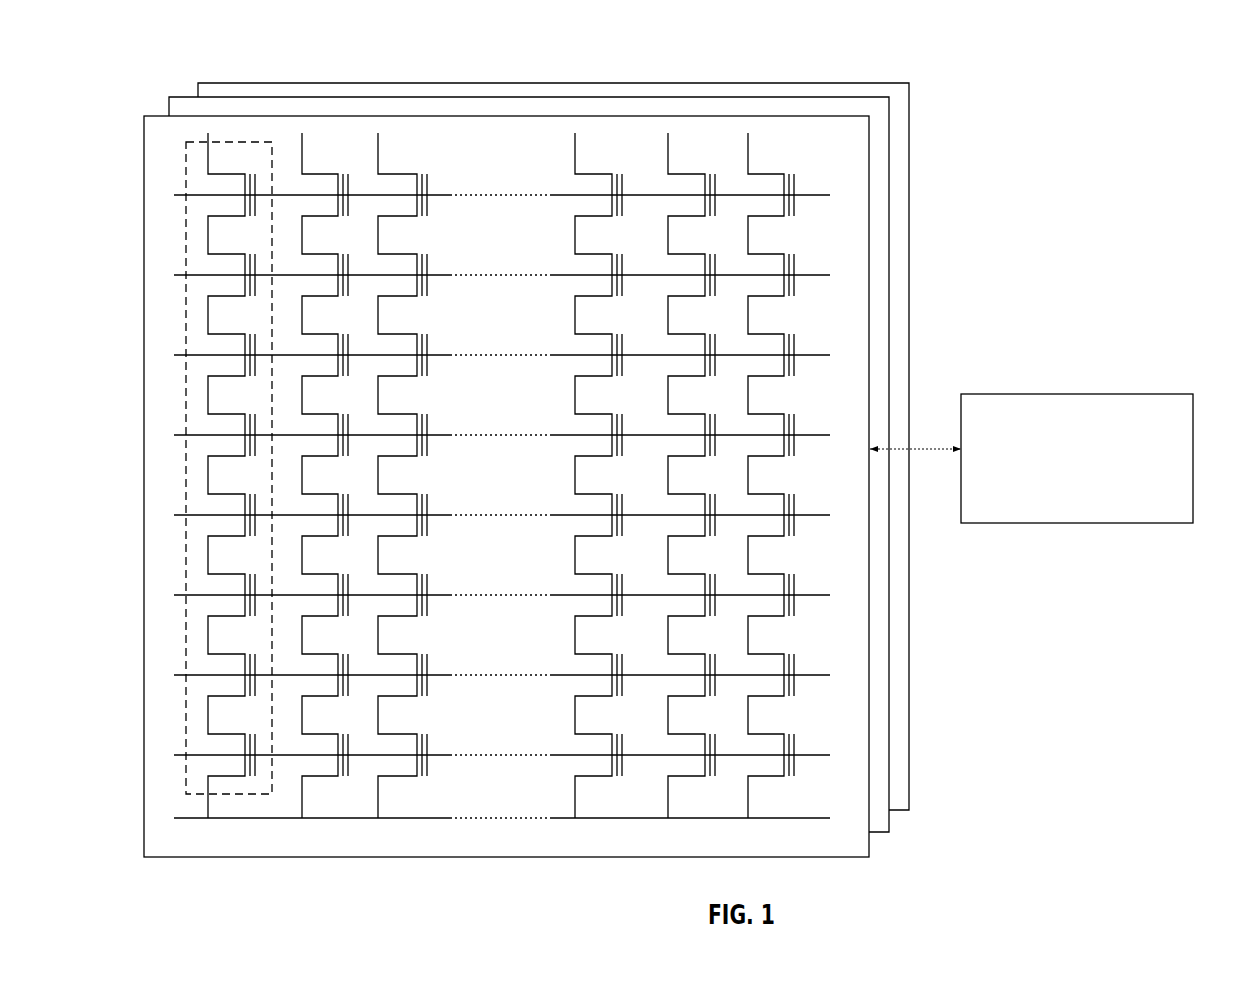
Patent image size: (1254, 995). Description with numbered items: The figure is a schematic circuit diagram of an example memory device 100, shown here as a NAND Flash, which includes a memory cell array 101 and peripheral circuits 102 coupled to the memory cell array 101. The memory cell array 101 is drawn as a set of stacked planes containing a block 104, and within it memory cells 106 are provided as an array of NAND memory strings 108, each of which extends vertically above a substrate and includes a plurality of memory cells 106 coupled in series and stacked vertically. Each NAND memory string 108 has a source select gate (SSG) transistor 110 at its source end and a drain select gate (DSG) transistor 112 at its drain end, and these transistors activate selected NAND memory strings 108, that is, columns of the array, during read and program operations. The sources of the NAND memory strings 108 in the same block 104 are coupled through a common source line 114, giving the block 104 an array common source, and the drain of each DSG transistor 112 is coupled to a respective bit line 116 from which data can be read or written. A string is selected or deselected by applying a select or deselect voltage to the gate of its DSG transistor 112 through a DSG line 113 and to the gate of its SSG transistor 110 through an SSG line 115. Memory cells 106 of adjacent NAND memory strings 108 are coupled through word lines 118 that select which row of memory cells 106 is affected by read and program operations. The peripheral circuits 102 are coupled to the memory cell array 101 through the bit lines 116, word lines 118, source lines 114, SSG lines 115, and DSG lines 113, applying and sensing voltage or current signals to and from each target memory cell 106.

The memory device 100 is at (700, 27).
The memory cell array 101 is at (863, 70).
The peripheral circuits 102 is at (1163, 394).
The block 104 is at (747, 116).
The memory cell 106 is at (243, 322).
The NAND memory string 108 is at (187, 245).
The source select gate (SSG) transistor 110 is at (243, 785).
The drain select gate (DSG) transistor 112 is at (240, 165).
The DSG line 113 is at (795, 195).
The source line 114 is at (320, 818).
The SSG line 115 is at (793, 757).
The bit line 116 is at (209, 152).
The word line 118 is at (437, 593).